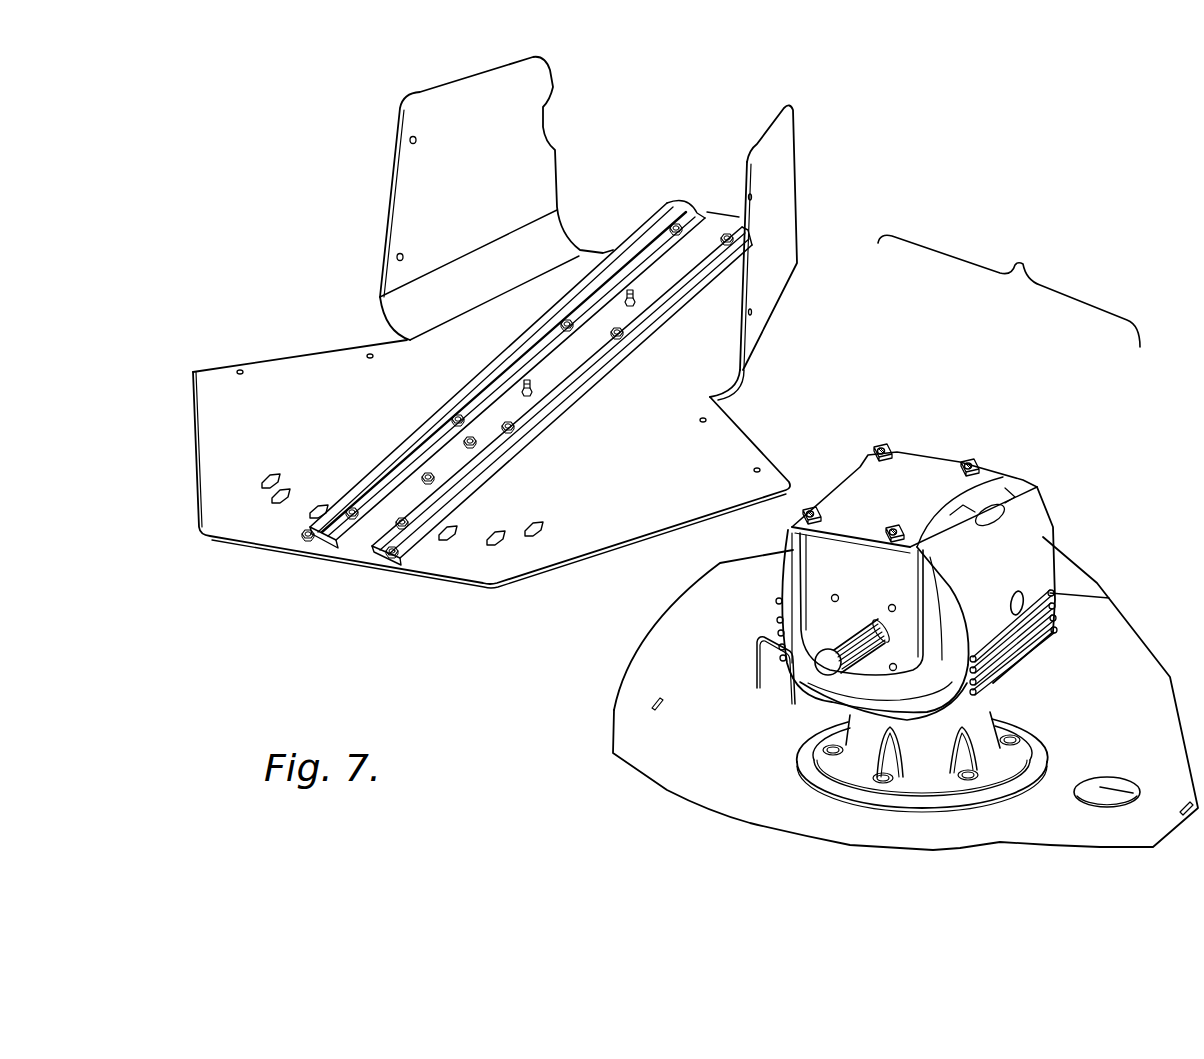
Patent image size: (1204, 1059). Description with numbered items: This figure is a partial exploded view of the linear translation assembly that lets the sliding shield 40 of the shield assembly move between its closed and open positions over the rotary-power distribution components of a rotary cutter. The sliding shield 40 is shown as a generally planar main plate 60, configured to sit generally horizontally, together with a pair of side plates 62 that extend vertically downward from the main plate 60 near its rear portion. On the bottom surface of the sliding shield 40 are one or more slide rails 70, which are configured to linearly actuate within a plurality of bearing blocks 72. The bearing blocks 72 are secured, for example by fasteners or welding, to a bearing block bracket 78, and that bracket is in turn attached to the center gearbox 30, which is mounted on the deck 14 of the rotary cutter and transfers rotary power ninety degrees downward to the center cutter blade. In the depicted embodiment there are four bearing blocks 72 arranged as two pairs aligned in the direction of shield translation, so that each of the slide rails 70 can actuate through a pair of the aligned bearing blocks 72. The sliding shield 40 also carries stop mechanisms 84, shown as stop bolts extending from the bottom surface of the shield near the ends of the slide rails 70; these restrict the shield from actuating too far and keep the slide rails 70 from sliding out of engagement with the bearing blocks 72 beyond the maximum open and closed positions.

The deck 14 is at (1103, 640).
The center gearbox 30 is at (1027, 552).
The sliding shield 40 is at (331, 251).
The main plate 60 is at (211, 420).
The side plates 62 is at (433, 112).
The slide rails 70 is at (372, 548).
The bearing blocks 72 is at (879, 447).
The bearing block bracket 78 is at (923, 470).
The stop mechanisms 84 is at (687, 200).